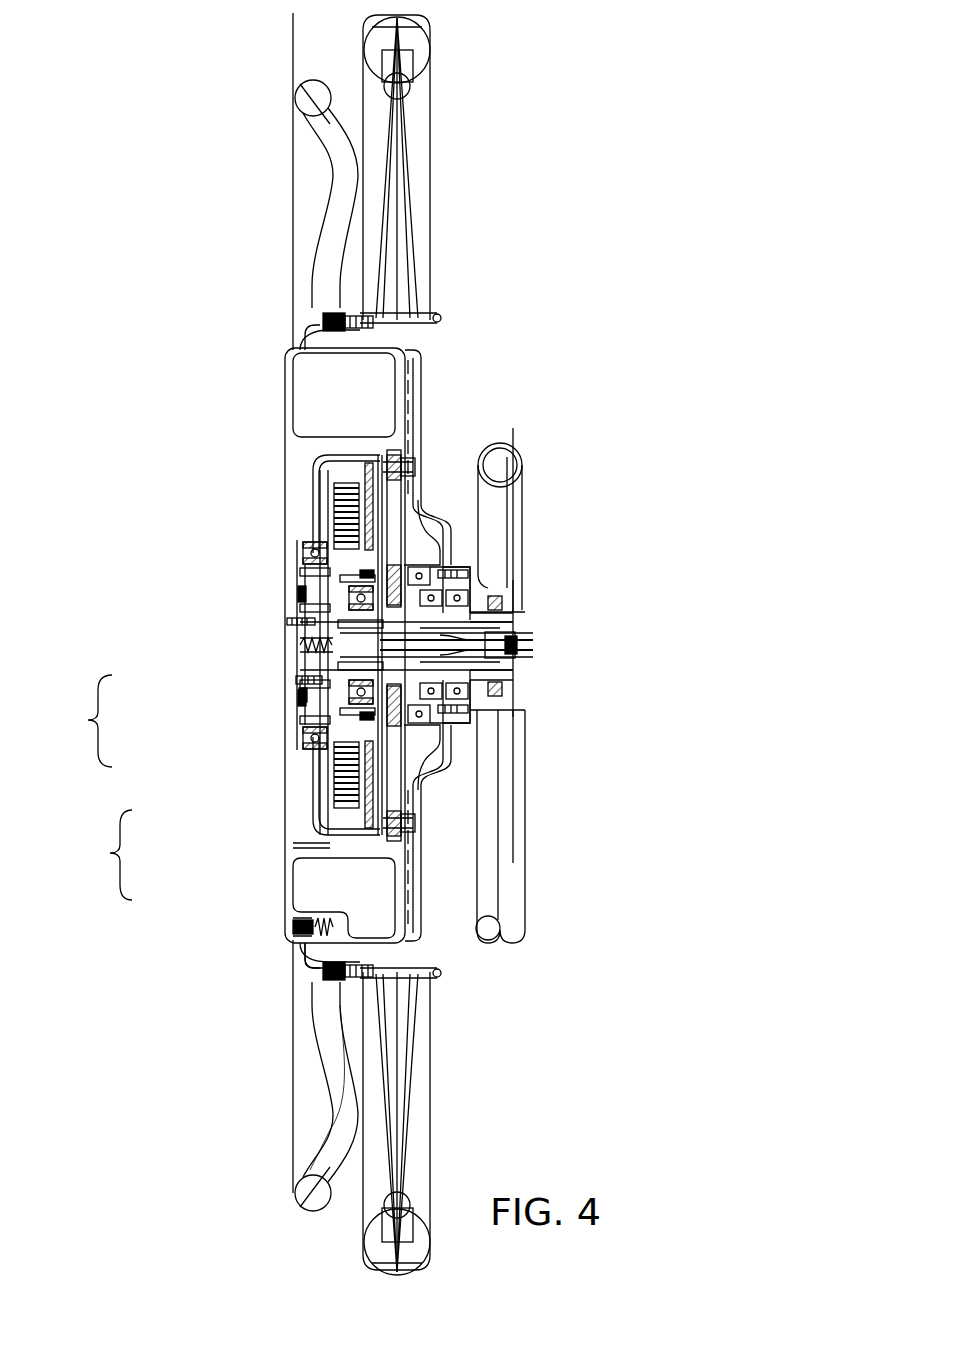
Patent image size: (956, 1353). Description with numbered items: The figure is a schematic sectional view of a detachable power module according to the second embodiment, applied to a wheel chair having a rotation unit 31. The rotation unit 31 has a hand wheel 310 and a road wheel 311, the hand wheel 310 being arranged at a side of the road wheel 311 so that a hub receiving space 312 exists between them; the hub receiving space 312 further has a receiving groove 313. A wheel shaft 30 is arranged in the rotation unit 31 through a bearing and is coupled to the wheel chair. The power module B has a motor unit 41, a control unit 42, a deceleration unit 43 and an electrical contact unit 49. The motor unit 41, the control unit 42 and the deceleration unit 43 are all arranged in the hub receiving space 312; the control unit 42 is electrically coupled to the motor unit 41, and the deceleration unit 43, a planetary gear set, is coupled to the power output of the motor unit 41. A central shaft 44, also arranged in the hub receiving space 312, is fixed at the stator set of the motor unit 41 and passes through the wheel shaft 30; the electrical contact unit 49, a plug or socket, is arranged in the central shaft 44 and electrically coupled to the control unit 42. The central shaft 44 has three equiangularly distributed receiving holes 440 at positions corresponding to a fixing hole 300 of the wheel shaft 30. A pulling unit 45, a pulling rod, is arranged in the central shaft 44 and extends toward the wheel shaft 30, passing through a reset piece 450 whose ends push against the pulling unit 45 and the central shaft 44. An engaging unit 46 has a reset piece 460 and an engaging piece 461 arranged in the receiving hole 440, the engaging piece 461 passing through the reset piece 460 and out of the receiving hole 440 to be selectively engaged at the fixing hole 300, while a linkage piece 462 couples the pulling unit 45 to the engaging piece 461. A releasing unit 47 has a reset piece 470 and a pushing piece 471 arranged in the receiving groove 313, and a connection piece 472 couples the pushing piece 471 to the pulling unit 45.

The rotation unit 31 is at (256, 70).
The hand wheel 310 is at (302, 100).
The road wheel 311 is at (418, 42).
The hub receiving space 312 is at (297, 450).
The receiving groove 313 is at (305, 943).
The motor unit 41 is at (326, 489).
The control unit 42 is at (293, 592).
The deceleration unit 43 is at (397, 505).
The central shaft 44 is at (480, 683).
The pulling unit 45 is at (280, 621).
The reset piece 450 is at (280, 645).
The engaging unit 46 is at (82, 721).
The reset piece 460 is at (292, 695).
The engaging piece 461 is at (292, 735).
The linkage piece 462 is at (300, 684).
The releasing unit 47 is at (107, 855).
The reset piece 470 is at (290, 902).
The pushing piece 471 is at (285, 927).
The connection piece 472 is at (290, 843).
The electrical contact unit 49 is at (503, 635).
The wheel shaft 30 is at (500, 612).
The fixing hole 300 is at (437, 712).
The receiving hole 440 is at (440, 712).
The power module B is at (300, 543).